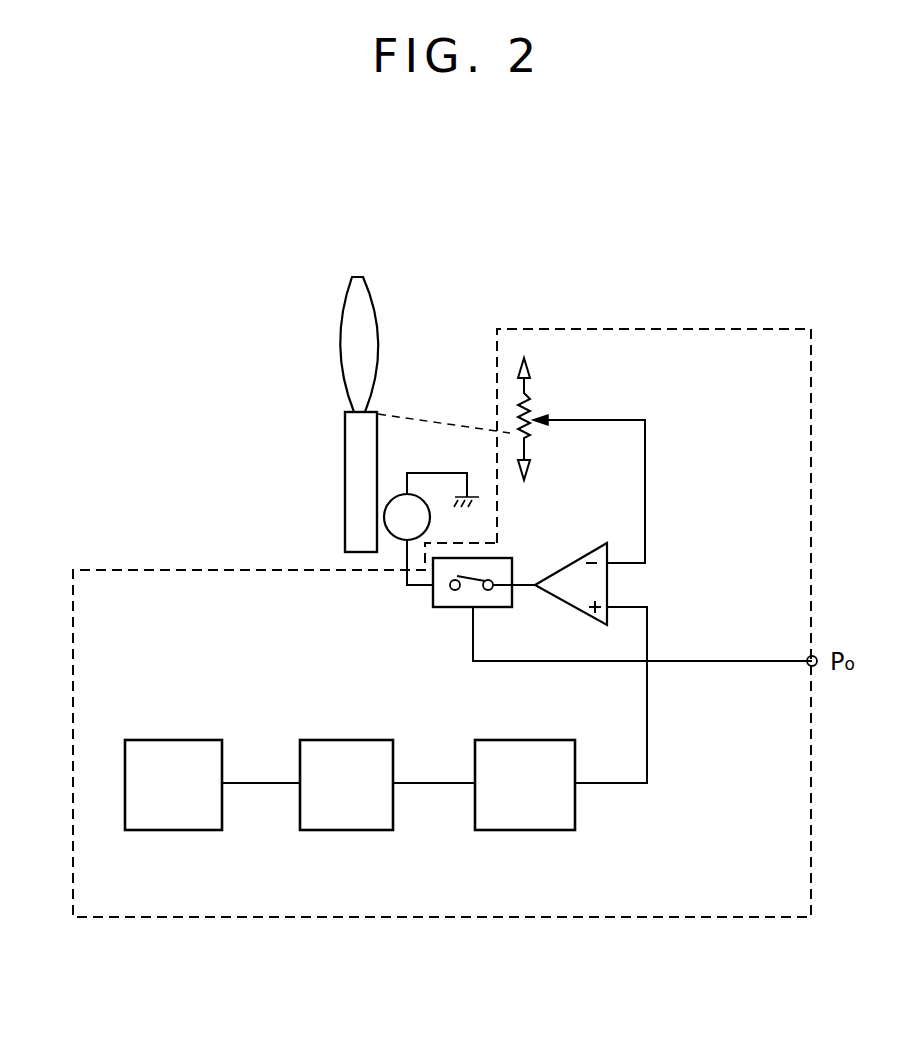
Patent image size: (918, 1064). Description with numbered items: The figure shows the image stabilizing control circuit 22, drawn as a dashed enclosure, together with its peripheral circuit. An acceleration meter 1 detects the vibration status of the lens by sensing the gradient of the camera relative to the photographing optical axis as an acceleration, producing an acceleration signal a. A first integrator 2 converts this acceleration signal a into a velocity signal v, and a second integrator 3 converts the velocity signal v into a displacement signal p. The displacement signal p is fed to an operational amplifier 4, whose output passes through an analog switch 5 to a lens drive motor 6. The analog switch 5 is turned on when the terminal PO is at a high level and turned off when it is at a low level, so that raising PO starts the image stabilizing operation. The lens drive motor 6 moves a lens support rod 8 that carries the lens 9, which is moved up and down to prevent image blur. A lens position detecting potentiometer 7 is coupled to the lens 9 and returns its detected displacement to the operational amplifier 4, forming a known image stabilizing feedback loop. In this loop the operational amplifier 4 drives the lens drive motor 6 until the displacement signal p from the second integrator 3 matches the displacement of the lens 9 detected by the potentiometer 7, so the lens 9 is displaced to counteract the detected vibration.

The acceleration meter 1 is at (159, 830).
The first integrator 2 is at (328, 830).
The second integrator 3 is at (507, 830).
The operational amplifier 4 is at (608, 592).
The analog switch 5 is at (455, 607).
The lens drive motor 6 is at (392, 496).
The lens position detecting potentiometer 7 is at (529, 404).
The lens support rod 8 is at (345, 470).
The lens 9 is at (375, 312).
The image stabilizing control circuit 22 is at (625, 329).